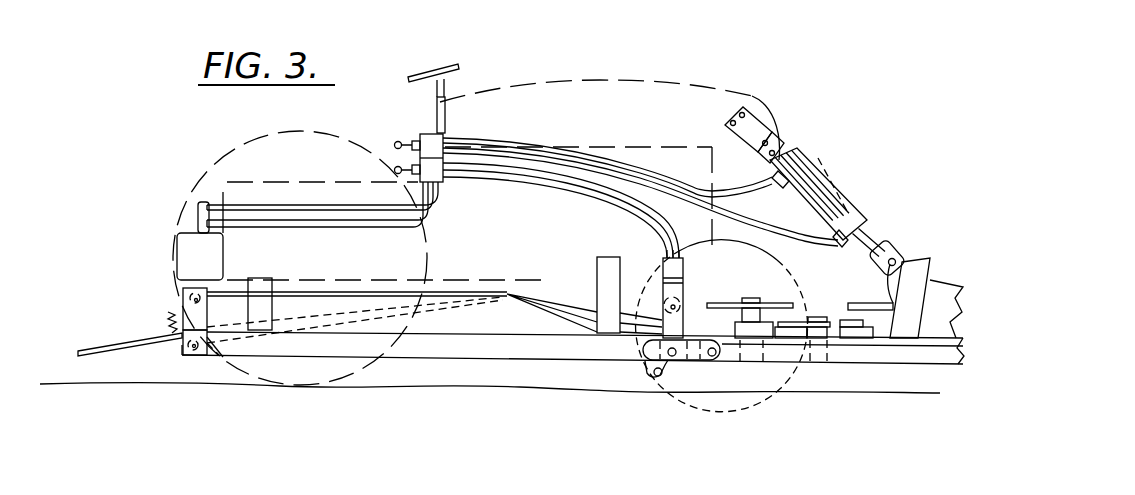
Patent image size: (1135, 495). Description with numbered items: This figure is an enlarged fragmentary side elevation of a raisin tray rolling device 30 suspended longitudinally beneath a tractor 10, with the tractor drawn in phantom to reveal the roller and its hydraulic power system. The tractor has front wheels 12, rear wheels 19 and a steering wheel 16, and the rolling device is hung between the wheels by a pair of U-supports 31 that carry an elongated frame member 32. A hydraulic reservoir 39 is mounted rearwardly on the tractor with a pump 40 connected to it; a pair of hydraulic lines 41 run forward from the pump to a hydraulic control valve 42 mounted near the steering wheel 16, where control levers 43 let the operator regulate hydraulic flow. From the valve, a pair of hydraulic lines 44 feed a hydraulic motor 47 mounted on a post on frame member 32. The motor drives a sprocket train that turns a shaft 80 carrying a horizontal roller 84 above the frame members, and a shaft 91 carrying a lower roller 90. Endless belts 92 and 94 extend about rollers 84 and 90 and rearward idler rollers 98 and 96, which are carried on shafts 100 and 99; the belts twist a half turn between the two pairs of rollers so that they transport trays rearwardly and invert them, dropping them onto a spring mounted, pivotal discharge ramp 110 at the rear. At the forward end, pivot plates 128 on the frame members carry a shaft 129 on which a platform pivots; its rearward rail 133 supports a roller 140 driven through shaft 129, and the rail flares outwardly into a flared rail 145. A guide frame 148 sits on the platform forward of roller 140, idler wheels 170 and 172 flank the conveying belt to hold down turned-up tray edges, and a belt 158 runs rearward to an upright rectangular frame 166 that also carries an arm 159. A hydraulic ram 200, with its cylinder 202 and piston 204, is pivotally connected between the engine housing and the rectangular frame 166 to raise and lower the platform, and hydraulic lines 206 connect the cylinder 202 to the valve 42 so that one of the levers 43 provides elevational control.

The tractor 10 is at (648, 72).
The front wheels 12 is at (727, 365).
The steering wheel 16 is at (462, 62).
The rear wheels 19 is at (225, 157).
The rolling device 30 is at (480, 375).
The U-supports 31 is at (273, 283).
The frame member 32 is at (425, 345).
The hydraulic reservoir 39 is at (177, 267).
The pump 40 is at (200, 213).
The hydraulic lines 41 is at (300, 228).
The hydraulic control valve 42 is at (428, 133).
The control levers 43 is at (395, 168).
The hydraulic lines 44 is at (537, 177).
The hydraulic motor 47 is at (645, 250).
The shaft 80 is at (678, 305).
The roller 84 is at (638, 295).
The roller 90 is at (650, 378).
The shaft 91 is at (700, 365).
The endless belt 92 is at (570, 298).
The endless belt 94 is at (458, 333).
The idler roller 96 is at (183, 293).
The idler roller 98 is at (213, 352).
The shaft 99 is at (197, 288).
The shaft 100 is at (192, 355).
The discharge ramp 110 is at (107, 347).
The pivot plates 128 is at (707, 365).
The shaft 129 is at (716, 362).
The rearward rail 133 is at (792, 357).
The roller 140 is at (716, 362).
The flared rail 145 is at (942, 357).
The guide frame 148 is at (863, 333).
The belt 158 is at (947, 281).
The arm 159 is at (905, 258).
The rectangular frame 166 is at (915, 260).
The idler wheel 170 is at (843, 338).
The idler wheel 172 is at (772, 303).
The hydraulic ram 200 is at (810, 150).
The cylinder 202 is at (817, 185).
The piston 204 is at (818, 158).
The hydraulic lines 206 is at (573, 160).